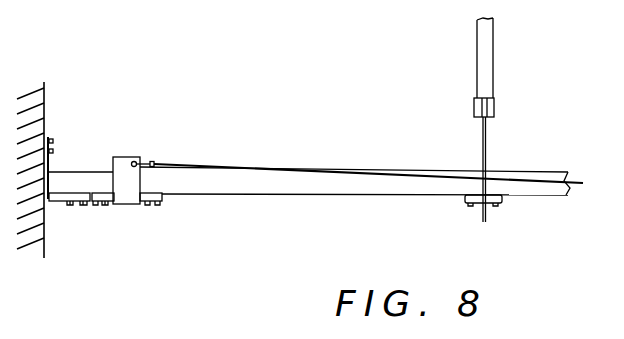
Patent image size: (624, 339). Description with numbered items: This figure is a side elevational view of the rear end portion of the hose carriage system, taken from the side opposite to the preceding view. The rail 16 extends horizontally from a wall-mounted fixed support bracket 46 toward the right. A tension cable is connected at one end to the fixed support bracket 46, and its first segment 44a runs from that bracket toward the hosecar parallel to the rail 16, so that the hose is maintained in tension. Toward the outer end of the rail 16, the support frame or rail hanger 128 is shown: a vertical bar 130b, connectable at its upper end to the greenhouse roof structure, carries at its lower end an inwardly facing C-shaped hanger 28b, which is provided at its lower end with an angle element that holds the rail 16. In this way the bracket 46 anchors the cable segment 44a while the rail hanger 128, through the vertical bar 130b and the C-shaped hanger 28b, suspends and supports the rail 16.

The rail 16 is at (268, 190).
The fixed support bracket 46 is at (121, 167).
The first segment of tension cable 44a is at (195, 167).
The support frame or rail hanger 128 is at (472, 120).
The vertical bar 130b is at (482, 63).
The C-shaped hanger 28b is at (486, 148).